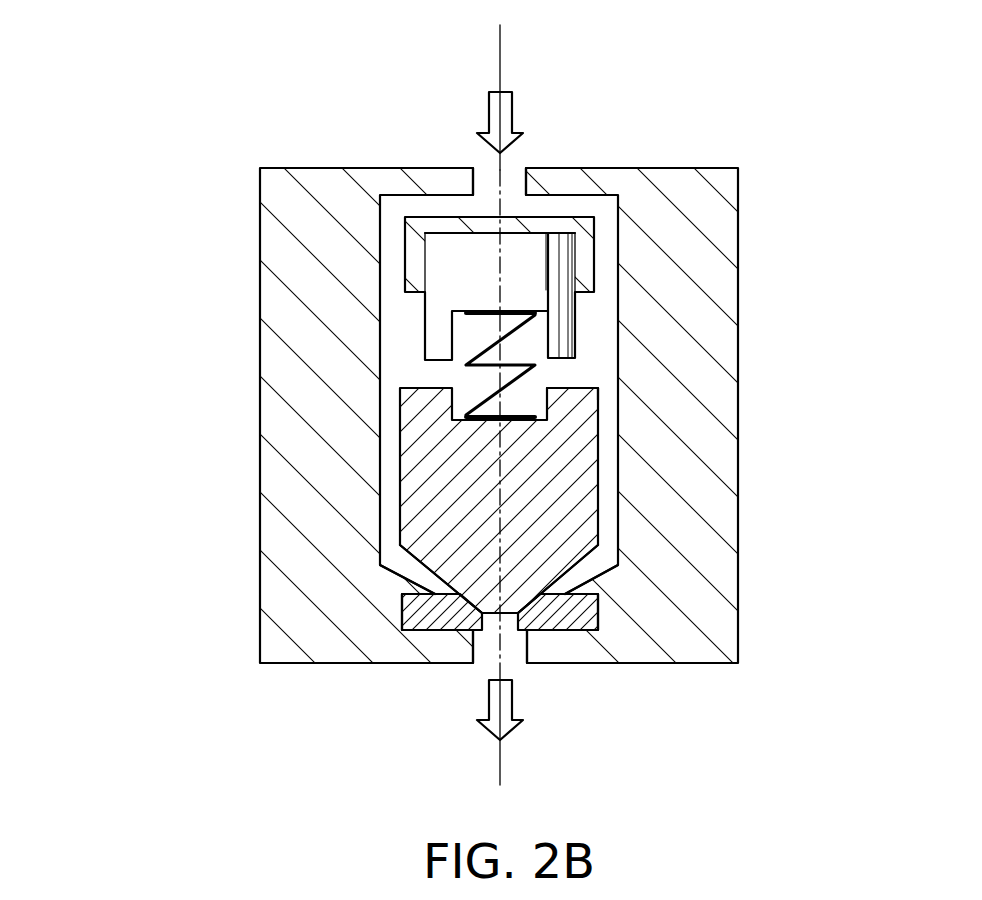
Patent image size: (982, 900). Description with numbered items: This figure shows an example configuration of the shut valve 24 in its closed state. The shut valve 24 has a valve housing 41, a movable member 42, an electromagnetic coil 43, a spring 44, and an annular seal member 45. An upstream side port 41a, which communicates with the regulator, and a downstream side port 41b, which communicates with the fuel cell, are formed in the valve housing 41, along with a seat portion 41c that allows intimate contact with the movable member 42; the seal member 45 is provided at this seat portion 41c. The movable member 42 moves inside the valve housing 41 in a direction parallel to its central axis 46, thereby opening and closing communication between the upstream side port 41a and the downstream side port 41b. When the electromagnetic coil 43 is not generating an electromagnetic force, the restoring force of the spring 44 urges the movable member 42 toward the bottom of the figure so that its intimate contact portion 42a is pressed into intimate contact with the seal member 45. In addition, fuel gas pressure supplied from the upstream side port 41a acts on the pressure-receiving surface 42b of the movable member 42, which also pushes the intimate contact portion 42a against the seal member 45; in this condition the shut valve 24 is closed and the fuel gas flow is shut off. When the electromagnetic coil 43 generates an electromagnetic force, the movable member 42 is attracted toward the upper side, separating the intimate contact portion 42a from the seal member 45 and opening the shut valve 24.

The shut valve 24 is at (232, 532).
The valve housing 41 is at (712, 377).
The upstream side port 41a is at (488, 168).
The downstream side port 41b is at (487, 660).
The seat portion 41c is at (409, 565).
The movable member 42 is at (598, 428).
The intimate contact portion 42a is at (533, 610).
The pressure-receiving surface 42b is at (585, 388).
The electromagnetic coil 43 is at (560, 308).
The spring 44 is at (483, 345).
The seal member 45 is at (588, 617).
The central axis 46 is at (500, 62).